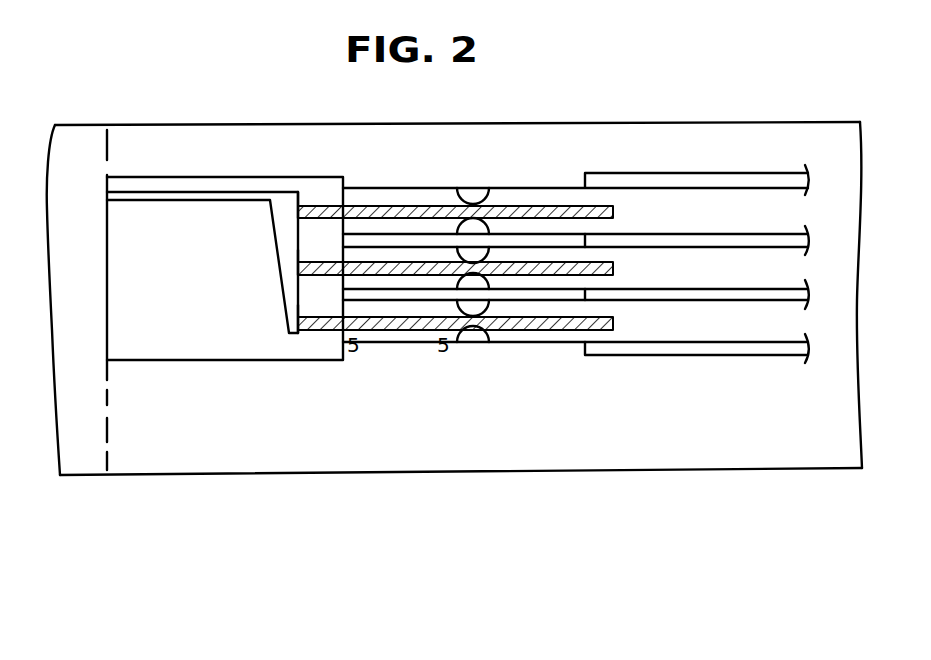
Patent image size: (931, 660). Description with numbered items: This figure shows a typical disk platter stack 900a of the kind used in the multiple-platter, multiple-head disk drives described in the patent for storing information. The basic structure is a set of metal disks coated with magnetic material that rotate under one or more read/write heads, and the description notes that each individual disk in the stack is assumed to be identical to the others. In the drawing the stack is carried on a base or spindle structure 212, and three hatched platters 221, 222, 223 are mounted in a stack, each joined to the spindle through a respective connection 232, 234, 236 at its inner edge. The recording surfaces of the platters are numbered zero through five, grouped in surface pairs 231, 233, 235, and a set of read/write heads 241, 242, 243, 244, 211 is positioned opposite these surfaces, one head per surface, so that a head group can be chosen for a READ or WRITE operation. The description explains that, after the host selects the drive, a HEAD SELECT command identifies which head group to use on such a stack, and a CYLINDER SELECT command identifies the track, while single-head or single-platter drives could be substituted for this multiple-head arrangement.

The disk platter stack 900a is at (131, 112).
The housing / board 212 is at (107, 291).
The first conductive bar 221 is at (617, 213).
The second conductive bar 222 is at (617, 268).
The third conductive bar 223 is at (617, 323).
The first signal line 231 is at (378, 196).
The second signal line pair 233 is at (393, 260).
The third signal line pair 235 is at (393, 315).
The first bar lead 232 is at (313, 219).
The second bar lead 234 is at (313, 276).
The third bar lead 236 is at (325, 333).
The contact 0 241 is at (472, 191).
The contact 1 242 is at (475, 228).
The contact 3 243 is at (478, 284).
The contact 4 244 is at (480, 308).
The contact 5 211 is at (478, 338).